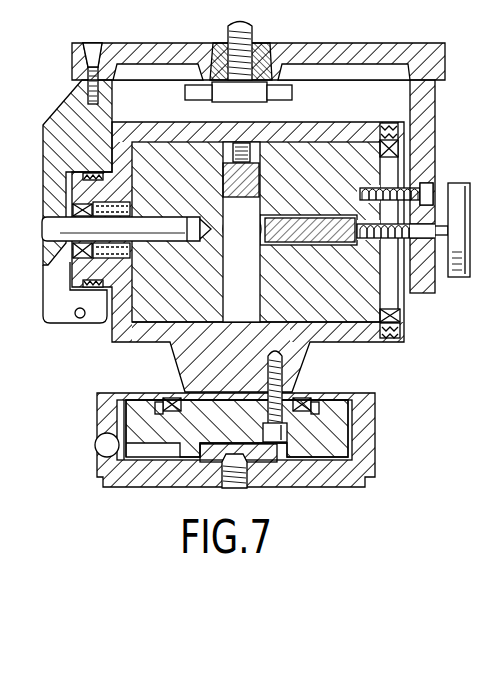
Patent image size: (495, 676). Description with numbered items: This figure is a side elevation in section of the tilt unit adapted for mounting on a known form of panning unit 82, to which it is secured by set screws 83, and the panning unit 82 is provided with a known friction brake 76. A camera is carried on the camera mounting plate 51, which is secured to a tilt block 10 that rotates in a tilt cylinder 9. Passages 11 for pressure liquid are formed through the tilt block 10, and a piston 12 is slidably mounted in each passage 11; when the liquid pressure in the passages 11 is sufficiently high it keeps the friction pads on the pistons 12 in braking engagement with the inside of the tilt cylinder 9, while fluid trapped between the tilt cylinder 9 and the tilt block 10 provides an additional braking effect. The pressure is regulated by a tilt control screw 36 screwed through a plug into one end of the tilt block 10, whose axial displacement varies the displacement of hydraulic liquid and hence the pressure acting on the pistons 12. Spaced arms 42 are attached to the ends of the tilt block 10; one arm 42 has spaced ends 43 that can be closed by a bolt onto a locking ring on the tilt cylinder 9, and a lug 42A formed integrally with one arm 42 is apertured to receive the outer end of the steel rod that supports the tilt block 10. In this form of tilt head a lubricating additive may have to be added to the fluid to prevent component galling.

The tilt cylinder 9 is at (350, 122).
The tilt block 10 is at (160, 150).
The passages 11 is at (249, 289).
The piston 12 is at (268, 158).
The tilt control screw 36 is at (467, 184).
The arm 42 is at (110, 101).
The lug 42A is at (47, 132).
The spaced ends 43 is at (46, 311).
The camera mounting plate 51 is at (363, 43).
The friction brake 76 is at (105, 449).
The panning unit 82 is at (377, 394).
The set screws 83 is at (282, 357).